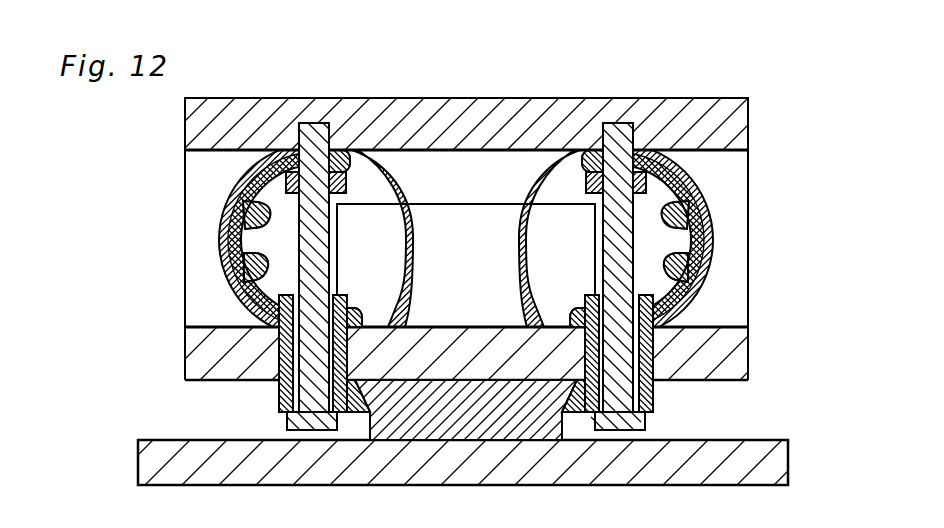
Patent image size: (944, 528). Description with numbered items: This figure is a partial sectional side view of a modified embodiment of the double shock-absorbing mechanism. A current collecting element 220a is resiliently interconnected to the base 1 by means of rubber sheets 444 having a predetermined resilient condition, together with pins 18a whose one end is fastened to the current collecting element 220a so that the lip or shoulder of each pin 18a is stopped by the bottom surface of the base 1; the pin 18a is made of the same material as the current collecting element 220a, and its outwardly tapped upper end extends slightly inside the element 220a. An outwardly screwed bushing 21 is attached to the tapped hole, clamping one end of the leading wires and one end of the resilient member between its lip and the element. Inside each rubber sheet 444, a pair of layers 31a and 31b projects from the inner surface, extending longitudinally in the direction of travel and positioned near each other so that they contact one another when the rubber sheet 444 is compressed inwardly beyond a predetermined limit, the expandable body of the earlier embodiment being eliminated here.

The base 1 is at (202, 352).
The pin 18a is at (312, 233).
The bushing 21 is at (340, 295).
The current collecting element 220a is at (468, 130).
The layer 31a is at (222, 214).
The layer 31b is at (250, 233).
The rubber sheet 444 is at (218, 238).